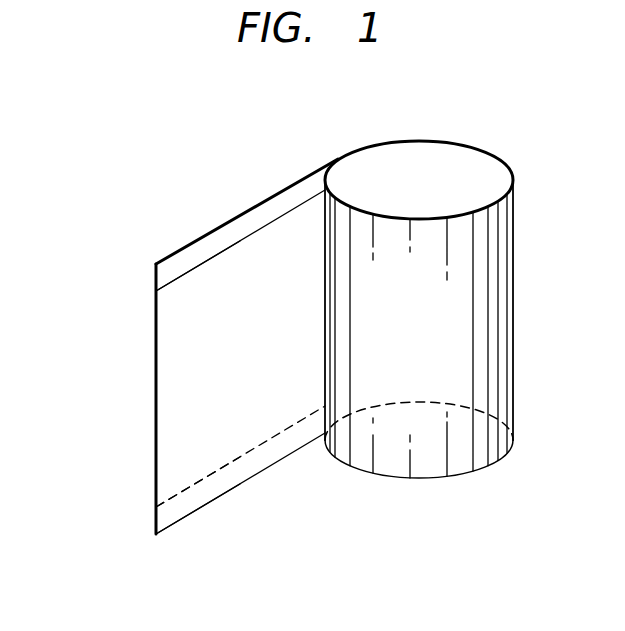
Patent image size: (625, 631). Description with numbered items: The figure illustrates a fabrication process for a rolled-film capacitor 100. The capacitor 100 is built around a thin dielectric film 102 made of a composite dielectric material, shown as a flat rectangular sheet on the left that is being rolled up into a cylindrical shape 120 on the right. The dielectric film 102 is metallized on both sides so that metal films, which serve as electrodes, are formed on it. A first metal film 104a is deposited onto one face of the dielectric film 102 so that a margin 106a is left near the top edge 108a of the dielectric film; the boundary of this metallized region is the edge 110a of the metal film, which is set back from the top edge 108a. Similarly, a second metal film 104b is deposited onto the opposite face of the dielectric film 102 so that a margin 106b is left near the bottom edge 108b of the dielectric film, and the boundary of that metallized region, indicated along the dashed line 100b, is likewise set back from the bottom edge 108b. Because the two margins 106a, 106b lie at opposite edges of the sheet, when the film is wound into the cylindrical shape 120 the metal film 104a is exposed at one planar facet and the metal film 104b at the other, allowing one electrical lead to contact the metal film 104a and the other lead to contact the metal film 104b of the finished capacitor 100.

The rolled-film capacitor 100 is at (320, 81).
The fold line 100b is at (245, 450).
The dielectric film 102 is at (191, 362).
The metal film 104a is at (180, 391).
The metal film 104b is at (147, 314).
The margin 106a is at (250, 222).
The margin 106b is at (250, 471).
The top edge of the dielectric film 108a is at (194, 235).
The bottom edge of the dielectric film 108b is at (200, 514).
The edge of the metal film 110a is at (222, 258).
The cylindrical shape 120 is at (477, 130).